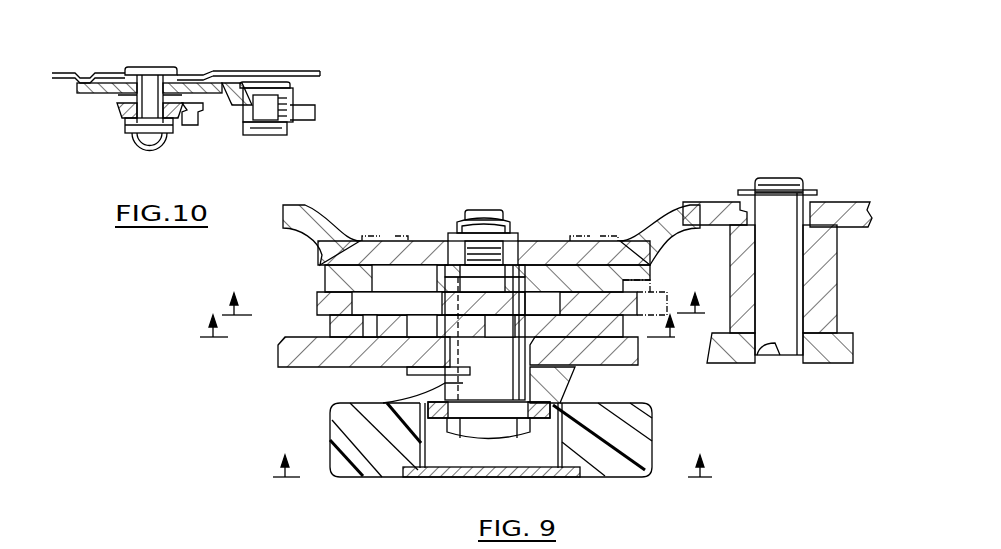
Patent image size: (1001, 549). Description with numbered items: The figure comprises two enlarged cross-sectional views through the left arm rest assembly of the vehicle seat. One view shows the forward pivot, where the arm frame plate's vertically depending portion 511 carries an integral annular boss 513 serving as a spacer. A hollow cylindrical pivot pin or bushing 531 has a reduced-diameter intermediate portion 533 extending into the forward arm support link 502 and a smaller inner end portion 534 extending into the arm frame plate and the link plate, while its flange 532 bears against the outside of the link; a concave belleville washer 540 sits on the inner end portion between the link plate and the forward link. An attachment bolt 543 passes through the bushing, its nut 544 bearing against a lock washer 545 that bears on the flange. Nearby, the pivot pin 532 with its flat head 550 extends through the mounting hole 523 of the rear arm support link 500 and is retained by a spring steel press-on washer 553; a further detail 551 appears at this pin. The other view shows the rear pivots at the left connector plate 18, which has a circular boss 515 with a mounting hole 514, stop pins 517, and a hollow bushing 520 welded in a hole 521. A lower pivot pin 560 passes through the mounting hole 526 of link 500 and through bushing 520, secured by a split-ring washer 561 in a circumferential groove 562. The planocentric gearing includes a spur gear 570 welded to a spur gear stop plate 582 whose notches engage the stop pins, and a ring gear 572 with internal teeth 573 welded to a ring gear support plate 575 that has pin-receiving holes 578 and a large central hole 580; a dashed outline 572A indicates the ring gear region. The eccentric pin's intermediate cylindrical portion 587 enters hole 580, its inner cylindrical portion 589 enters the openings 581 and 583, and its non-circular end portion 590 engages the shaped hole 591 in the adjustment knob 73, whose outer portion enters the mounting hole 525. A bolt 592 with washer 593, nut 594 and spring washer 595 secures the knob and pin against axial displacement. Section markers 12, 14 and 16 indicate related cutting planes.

In FIG. 9, the left connector plate 18 is at (840, 205).
In FIG. 9, the arm rest adjustment knob 73 is at (330, 440).
In FIG. 10, the rear arm support link 500 is at (312, 122).
In FIG. 9, the rear arm support link 500 is at (838, 363).
In FIG. 10, the forward arm support link 502 is at (200, 125).
In FIG. 9, the forward arm support link 502 is at (640, 354).
In FIG. 10, the vertically depending portion 511 is at (282, 71).
In FIG. 10, the annular boss 513 is at (208, 73).
In FIG. 9, the mounting hole 514 is at (462, 233).
In FIG. 9, the circular boss 515 is at (300, 240).
In FIG. 9, the stop pins 517 is at (350, 241).
In FIG. 9, the hollow cylindrical bushing 520 is at (835, 275).
In FIG. 9, the hole 521 is at (738, 205).
In FIG. 10, the mounting hole 523 is at (318, 112).
In FIG. 9, the mounting hole 525 is at (555, 395).
In FIG. 9, the mounting hole 526 is at (772, 356).
In FIG. 10, the pivot pin 531 is at (170, 85).
In FIG. 10, the pivot pin 532 is at (130, 125).
In FIG. 10, the intermediate portion 533 is at (122, 112).
In FIG. 10, the inner end portion 534 is at (130, 78).
In FIG. 10, the belleville washer 540 is at (118, 98).
In FIG. 10, the attachment bolt 543 is at (142, 67).
In FIG. 10, the nut 544 is at (160, 150).
In FIG. 10, the lock washer 545 is at (135, 148).
In FIG. 10, the flat head 550 is at (300, 88).
In FIG. 10, the screw thread 551 is at (290, 100).
In FIG. 10, the press-on washer 553 is at (248, 135).
In FIG. 9, the lower pivot pin 560 is at (790, 264).
In FIG. 9, the split-ring washer 561 is at (810, 190).
In FIG. 9, the circumferential groove 562 is at (768, 180).
In FIG. 9, the spur gear 570 is at (362, 290).
In FIG. 9, the ring gear 572 is at (648, 300).
In FIG. 9, the spacer extension 572A is at (652, 275).
In FIG. 9, the internal teeth 573 is at (360, 297).
In FIG. 9, the ring gear support plate 575 is at (330, 323).
In FIG. 9, the pin-receiving holes 578 is at (330, 345).
In FIG. 9, the circular hole 580 is at (568, 368).
In FIG. 9, the central circular opening 581 is at (612, 241).
In FIG. 9, the spur gear stop plate 582 is at (645, 265).
In FIG. 9, the central circular opening 583 is at (435, 262).
In FIG. 9, the intermediate cylindrical portion 587 is at (410, 372).
In FIG. 9, the inner cylindrical portion 589 is at (405, 241).
In FIG. 9, the non-circular end portion 590 is at (383, 394).
In FIG. 9, the hole 591 is at (333, 410).
In FIG. 9, the bolt 592 is at (490, 440).
In FIG. 9, the washer 593 is at (520, 241).
In FIG. 9, the nut 594 is at (505, 233).
In FIG. 9, the spring washer 595 is at (543, 418).
In FIG. 9, the section line 12 is at (487, 464).
In FIG. 9, the section line 14 is at (442, 326).
In FIG. 9, the section line 16 is at (465, 302).